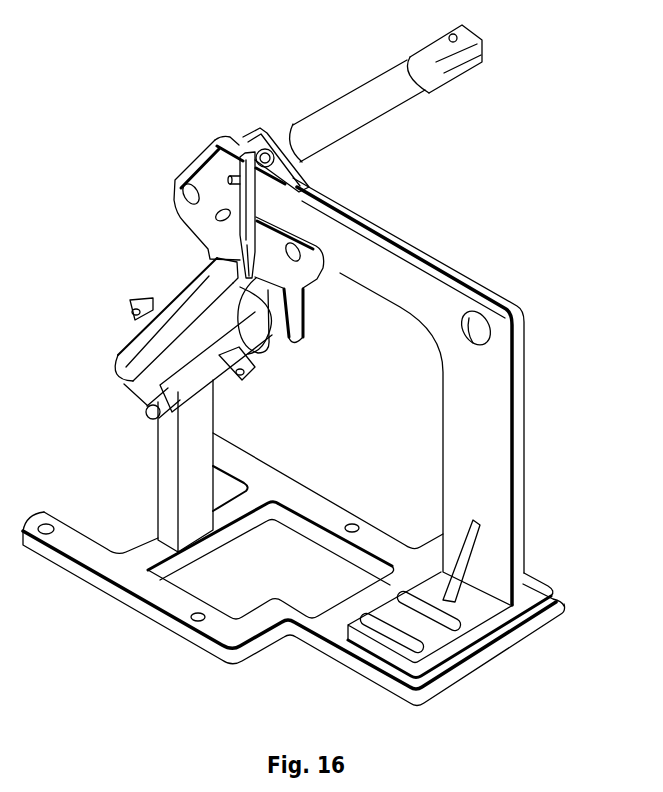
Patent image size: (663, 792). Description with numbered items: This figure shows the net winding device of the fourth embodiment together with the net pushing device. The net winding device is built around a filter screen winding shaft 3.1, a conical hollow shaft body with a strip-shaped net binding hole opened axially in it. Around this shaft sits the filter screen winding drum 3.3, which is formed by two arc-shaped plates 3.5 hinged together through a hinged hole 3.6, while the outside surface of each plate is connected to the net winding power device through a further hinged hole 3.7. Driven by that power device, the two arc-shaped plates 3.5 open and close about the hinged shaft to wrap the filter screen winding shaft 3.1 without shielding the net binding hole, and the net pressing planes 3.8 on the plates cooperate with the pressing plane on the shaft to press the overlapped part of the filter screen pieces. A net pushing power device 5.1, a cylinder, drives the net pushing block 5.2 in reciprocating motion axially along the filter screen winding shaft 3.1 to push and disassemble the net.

The net pushing power device 5.1 is at (348, 118).
The net pushing block 5.2 is at (180, 175).
The filter screen winding shaft 3.1 is at (215, 262).
The filter screen winding drum 3.3 is at (150, 400).
The arc-shaped plates 3.5 is at (205, 378).
The hinged hole 3.6 is at (240, 375).
The hinged hole 3.7 is at (128, 305).
The net pressing planes 3.8 is at (160, 328).